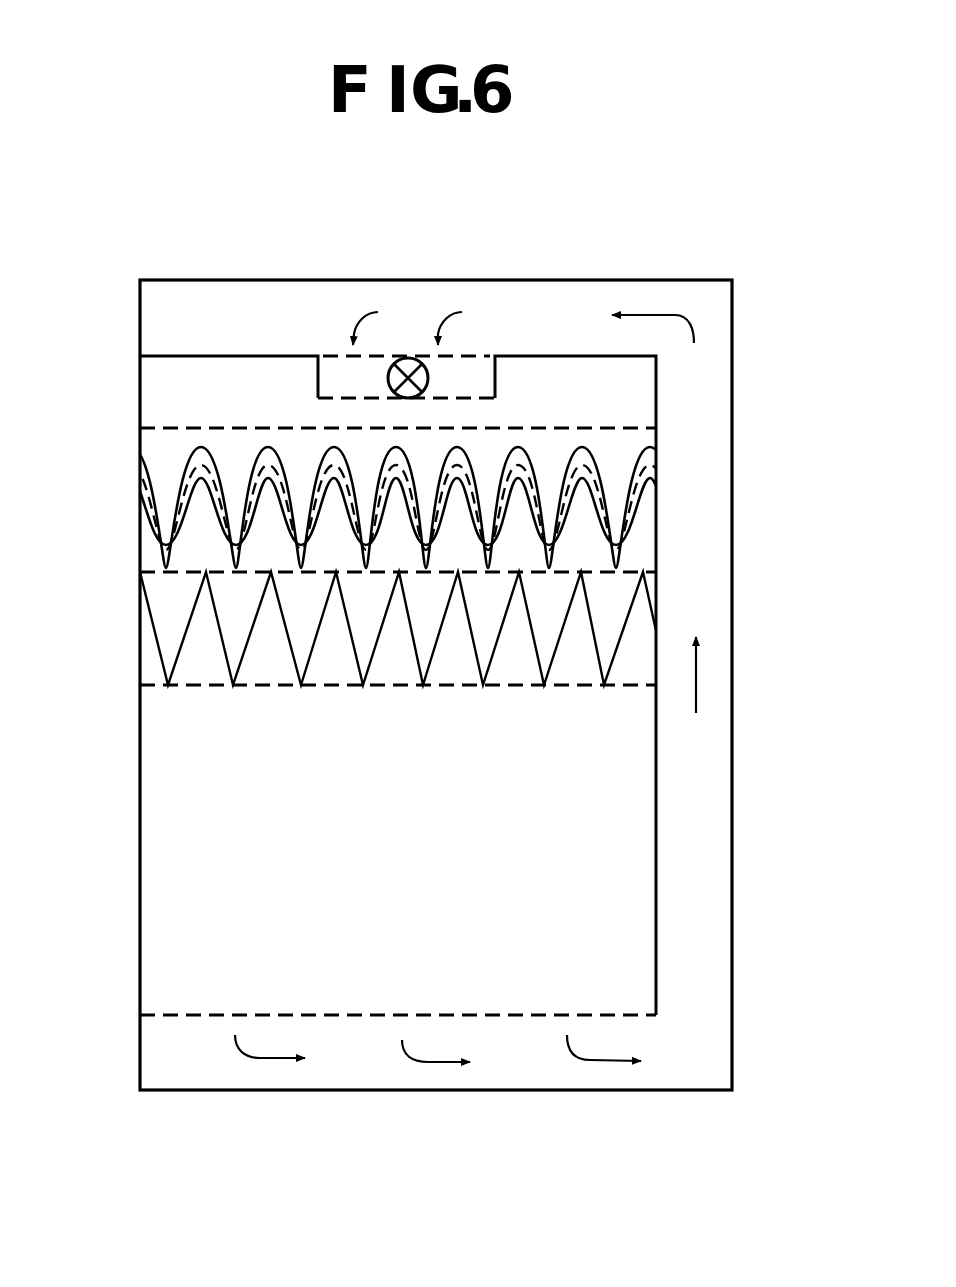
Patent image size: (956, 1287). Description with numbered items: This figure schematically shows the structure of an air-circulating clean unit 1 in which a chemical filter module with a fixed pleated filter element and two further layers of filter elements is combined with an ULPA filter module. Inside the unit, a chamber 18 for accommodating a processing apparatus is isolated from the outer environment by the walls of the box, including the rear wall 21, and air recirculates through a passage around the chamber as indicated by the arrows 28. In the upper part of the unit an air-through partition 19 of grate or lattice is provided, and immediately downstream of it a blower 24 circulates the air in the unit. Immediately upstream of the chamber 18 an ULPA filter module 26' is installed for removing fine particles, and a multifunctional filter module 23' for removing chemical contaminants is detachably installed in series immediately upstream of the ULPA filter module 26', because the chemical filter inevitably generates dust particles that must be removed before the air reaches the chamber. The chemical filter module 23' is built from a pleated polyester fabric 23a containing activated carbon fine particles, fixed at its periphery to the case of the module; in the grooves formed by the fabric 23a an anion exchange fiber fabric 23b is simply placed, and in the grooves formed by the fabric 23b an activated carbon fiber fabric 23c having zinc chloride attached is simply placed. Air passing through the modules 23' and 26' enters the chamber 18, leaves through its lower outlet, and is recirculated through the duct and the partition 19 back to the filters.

The housing 1 is at (733, 461).
The chamber 18 is at (222, 833).
The partition 19 is at (348, 402).
The rear wall 21 is at (240, 1015).
The multifunctional filter module 23' is at (438, 502).
The pleated polyester fabric 23a is at (210, 488).
The anion exchange fiber fabric 23b is at (210, 518).
The activated carbon fiber fabric 23c is at (217, 478).
The blower 24 is at (408, 356).
The ULPA filter module 26' is at (482, 628).
The arrows 28 is at (697, 687).